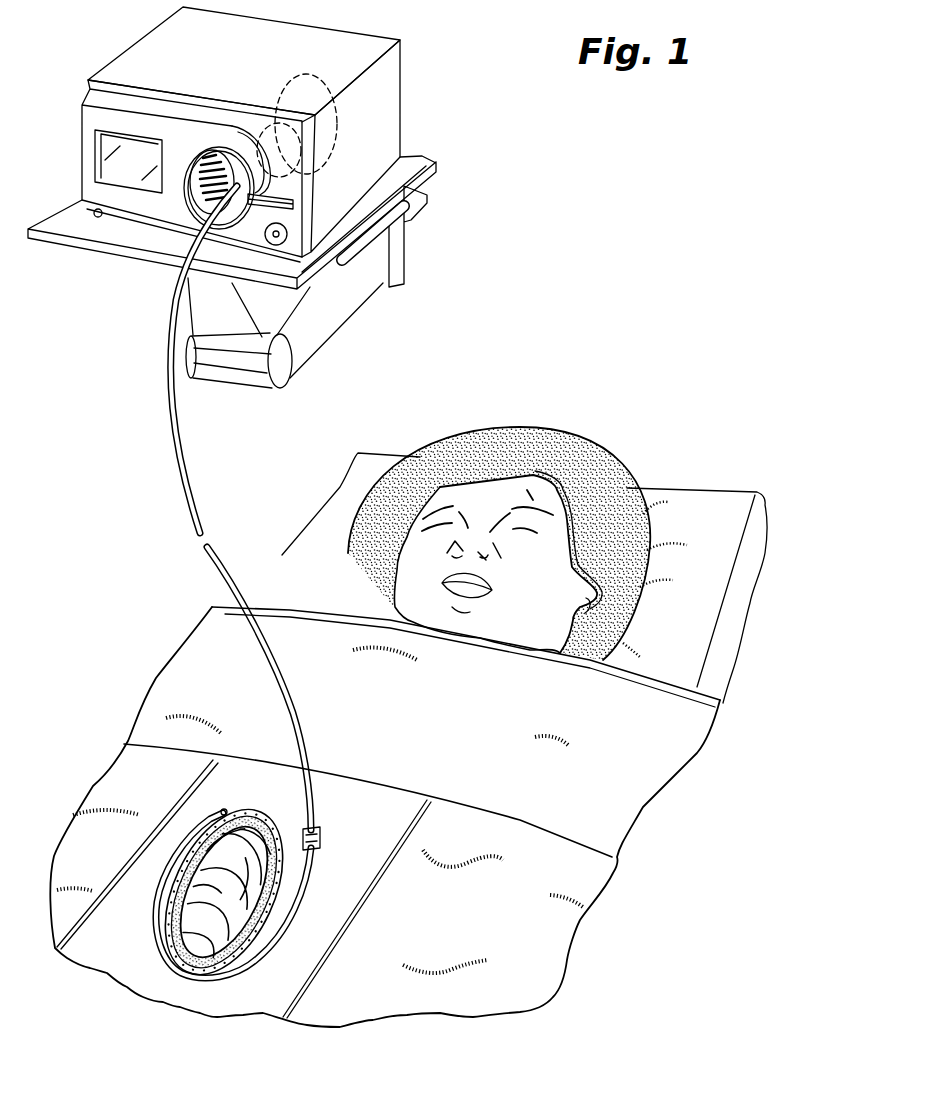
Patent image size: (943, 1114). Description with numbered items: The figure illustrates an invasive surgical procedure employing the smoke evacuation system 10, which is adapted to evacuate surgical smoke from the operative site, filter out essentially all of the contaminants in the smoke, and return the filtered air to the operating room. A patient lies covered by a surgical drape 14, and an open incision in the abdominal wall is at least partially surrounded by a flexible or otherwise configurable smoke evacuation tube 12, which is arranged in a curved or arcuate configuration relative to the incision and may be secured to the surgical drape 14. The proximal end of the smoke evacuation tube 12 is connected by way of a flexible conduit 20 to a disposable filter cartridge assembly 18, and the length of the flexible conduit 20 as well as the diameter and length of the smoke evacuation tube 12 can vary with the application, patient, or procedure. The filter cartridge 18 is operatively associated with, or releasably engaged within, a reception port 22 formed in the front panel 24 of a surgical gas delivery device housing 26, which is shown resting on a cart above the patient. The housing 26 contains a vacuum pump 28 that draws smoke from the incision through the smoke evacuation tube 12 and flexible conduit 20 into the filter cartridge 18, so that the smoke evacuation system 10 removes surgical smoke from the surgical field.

The smoke evacuation system 10 is at (127, 463).
The smoke evacuation tube 12 is at (156, 931).
The surgical drape 14 is at (374, 832).
The filter cartridge assembly 18 is at (243, 113).
The flexible conduit 20 is at (197, 489).
The reception port 22 is at (180, 262).
The front panel 24 is at (90, 95).
The surgical gas delivery device housing 26 is at (133, 57).
The vacuum pump 28 is at (313, 80).